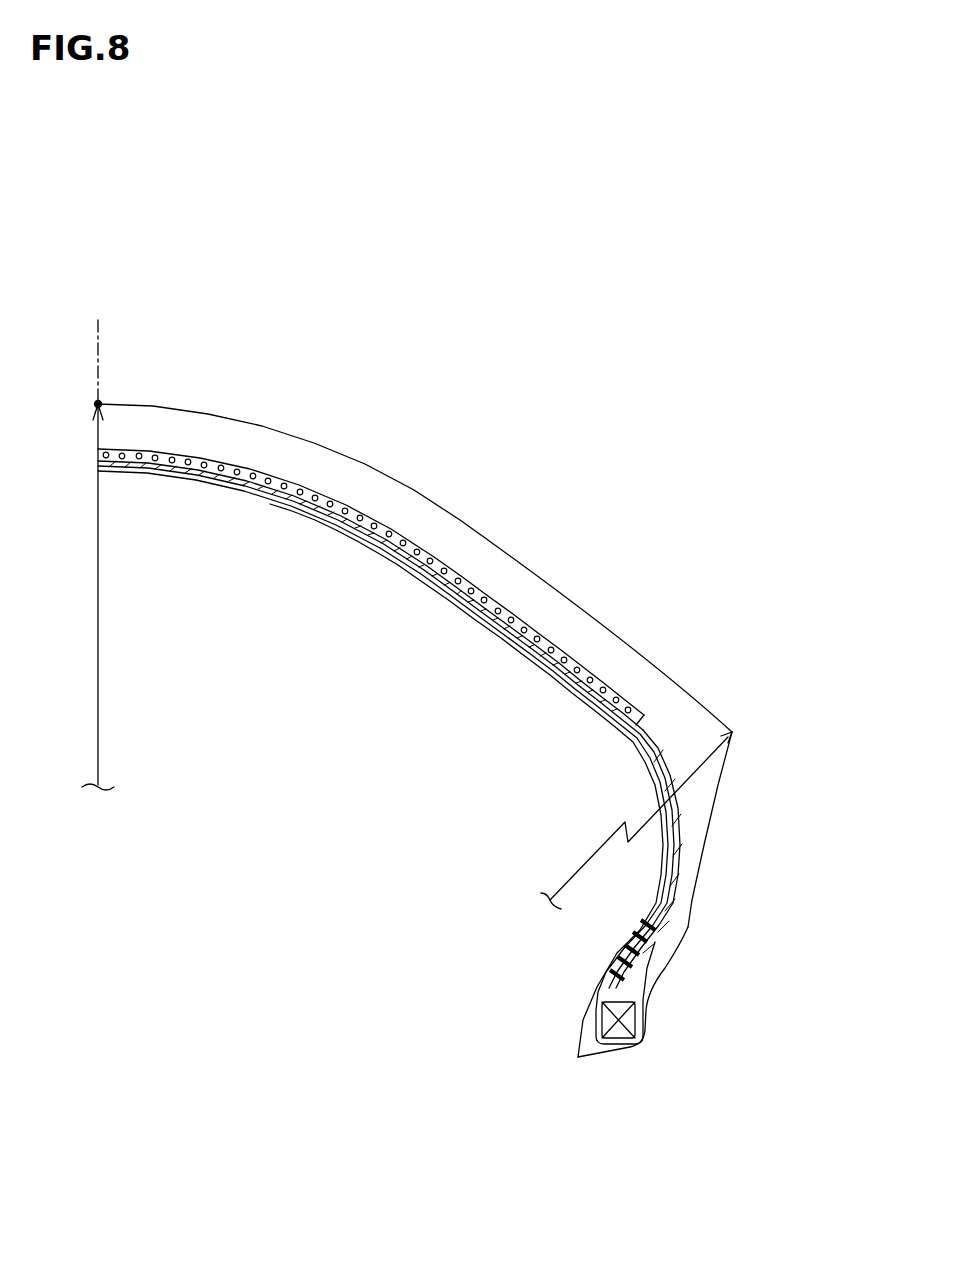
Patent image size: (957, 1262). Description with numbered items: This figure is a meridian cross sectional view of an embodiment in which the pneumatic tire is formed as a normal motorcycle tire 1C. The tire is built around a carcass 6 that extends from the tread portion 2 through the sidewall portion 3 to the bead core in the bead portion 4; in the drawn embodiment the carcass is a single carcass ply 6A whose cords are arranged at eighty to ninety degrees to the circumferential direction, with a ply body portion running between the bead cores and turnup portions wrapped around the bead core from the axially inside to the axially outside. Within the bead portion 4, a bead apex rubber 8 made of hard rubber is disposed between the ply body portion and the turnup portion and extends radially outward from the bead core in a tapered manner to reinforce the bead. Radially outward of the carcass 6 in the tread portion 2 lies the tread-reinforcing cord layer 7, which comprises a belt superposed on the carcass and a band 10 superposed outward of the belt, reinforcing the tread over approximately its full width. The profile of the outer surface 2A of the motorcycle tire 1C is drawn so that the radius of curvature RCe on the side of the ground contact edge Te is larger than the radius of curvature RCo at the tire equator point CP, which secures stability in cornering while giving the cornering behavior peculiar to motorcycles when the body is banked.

The motorcycle tire 1C is at (442, 415).
The outer surface 2A is at (415, 568).
The tread portion 2 is at (467, 522).
The sidewall portion 3 is at (737, 823).
The bead portion 4 is at (568, 1010).
The carcass 6 is at (471, 724).
The carcass ply 6A is at (680, 857).
The tread-reinforcing cord layer 7 is at (371, 540).
The band 10 is at (277, 473).
The bead apex rubber 8 is at (635, 967).
The tire equator point CP is at (98, 404).
The ground contact edge Te is at (732, 732).
The radius of curvature at the tire equator point RCo is at (98, 641).
The radius of curvature on the ground contact edge side RCe is at (587, 861).